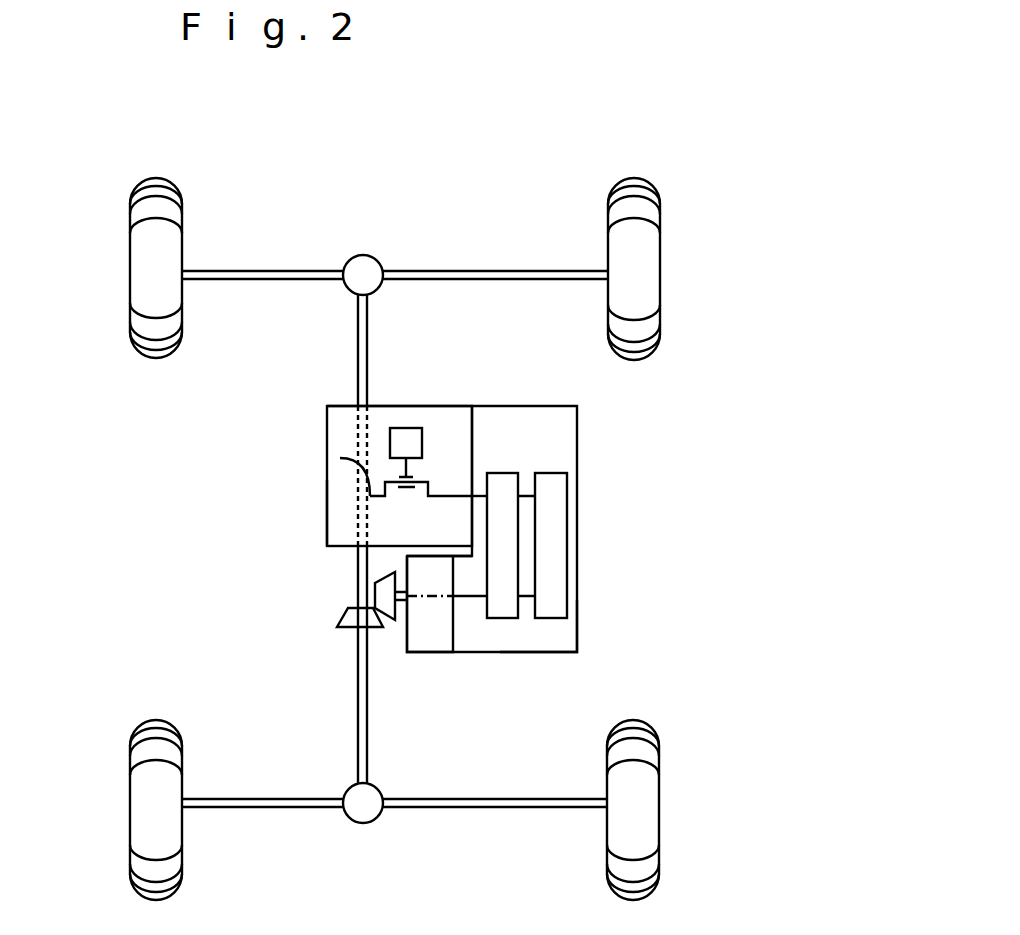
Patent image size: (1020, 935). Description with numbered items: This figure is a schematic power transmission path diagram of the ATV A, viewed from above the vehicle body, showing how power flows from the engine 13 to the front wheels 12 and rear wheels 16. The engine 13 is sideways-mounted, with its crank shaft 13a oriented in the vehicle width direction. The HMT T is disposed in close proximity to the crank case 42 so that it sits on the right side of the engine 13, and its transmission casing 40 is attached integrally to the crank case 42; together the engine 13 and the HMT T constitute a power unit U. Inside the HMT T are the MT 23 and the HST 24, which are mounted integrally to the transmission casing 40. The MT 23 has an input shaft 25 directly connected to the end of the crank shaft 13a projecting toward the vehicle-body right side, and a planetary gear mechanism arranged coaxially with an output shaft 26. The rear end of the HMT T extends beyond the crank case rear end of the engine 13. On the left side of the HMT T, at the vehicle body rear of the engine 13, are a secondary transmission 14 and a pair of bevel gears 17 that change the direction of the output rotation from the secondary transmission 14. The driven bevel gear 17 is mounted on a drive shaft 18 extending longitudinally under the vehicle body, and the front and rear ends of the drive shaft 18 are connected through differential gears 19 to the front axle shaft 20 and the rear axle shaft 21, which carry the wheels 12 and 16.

The wheels 12 is at (130, 240).
The engine 13 is at (418, 406).
The crank shaft 13a is at (340, 458).
The secondary transmission 14 is at (420, 652).
The wheels 16 is at (130, 797).
The bevel gears 17 is at (375, 580).
The drive shaft 18 is at (357, 700).
The differential gears 19 is at (365, 255).
The front axle shaft 20 is at (465, 271).
The rear axle shaft 21 is at (463, 808).
The MT 23 is at (507, 473).
The HST 24 is at (553, 473).
The input shaft 25 is at (481, 494).
The output shaft 26 is at (467, 598).
The transmission casing 40 is at (577, 627).
The crank case 42 is at (327, 515).
The ATV A is at (60, 512).
The HMT T is at (531, 404).
The power unit U is at (594, 561).